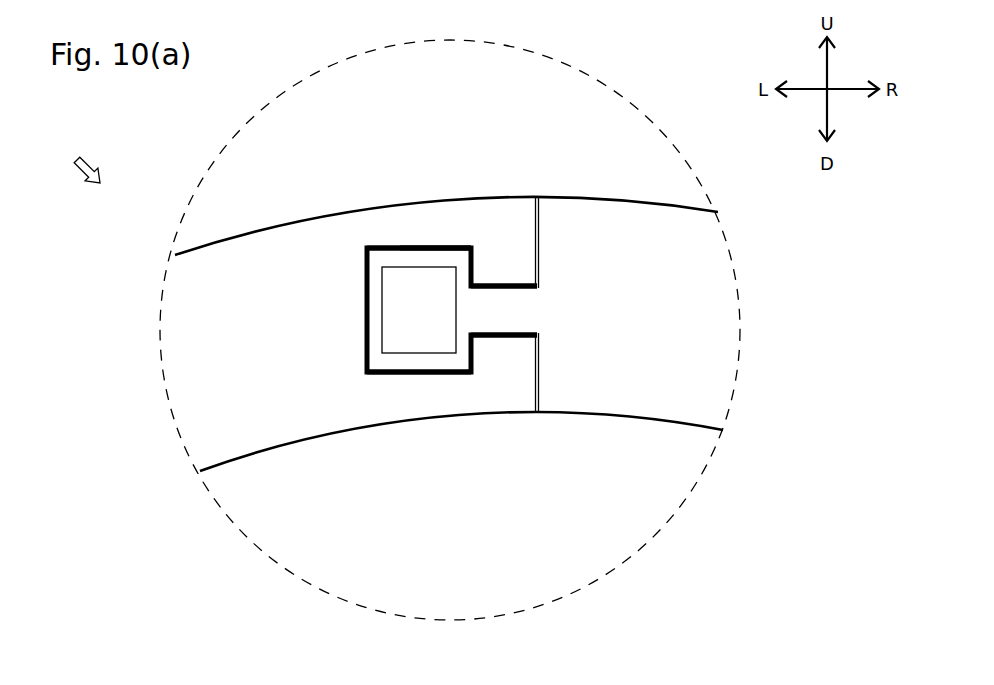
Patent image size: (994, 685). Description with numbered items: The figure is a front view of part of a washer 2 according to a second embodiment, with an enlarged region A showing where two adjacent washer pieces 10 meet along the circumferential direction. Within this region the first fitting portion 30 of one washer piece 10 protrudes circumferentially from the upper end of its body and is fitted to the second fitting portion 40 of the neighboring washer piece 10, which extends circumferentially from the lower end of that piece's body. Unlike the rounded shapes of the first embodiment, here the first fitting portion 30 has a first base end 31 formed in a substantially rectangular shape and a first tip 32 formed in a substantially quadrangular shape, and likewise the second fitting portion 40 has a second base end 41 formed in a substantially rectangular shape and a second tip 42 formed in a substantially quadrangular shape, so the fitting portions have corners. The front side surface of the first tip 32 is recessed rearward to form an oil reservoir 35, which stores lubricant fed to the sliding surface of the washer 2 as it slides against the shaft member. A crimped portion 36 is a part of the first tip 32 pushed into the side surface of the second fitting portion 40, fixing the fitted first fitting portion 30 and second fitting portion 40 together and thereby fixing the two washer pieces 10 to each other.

The washer 2 is at (77, 162).
The washer piece 10 is at (220, 214).
The enlarged region A is at (290, 77).
The first fitting portion 30 is at (365, 287).
The first base end 31 is at (495, 297).
The first tip 32 is at (377, 257).
The oil reservoir 35 is at (405, 268).
The crimped portion 36 is at (418, 247).
The second fitting portion 40 is at (536, 290).
The second base end 41 is at (496, 326).
The second tip 42 is at (412, 362).